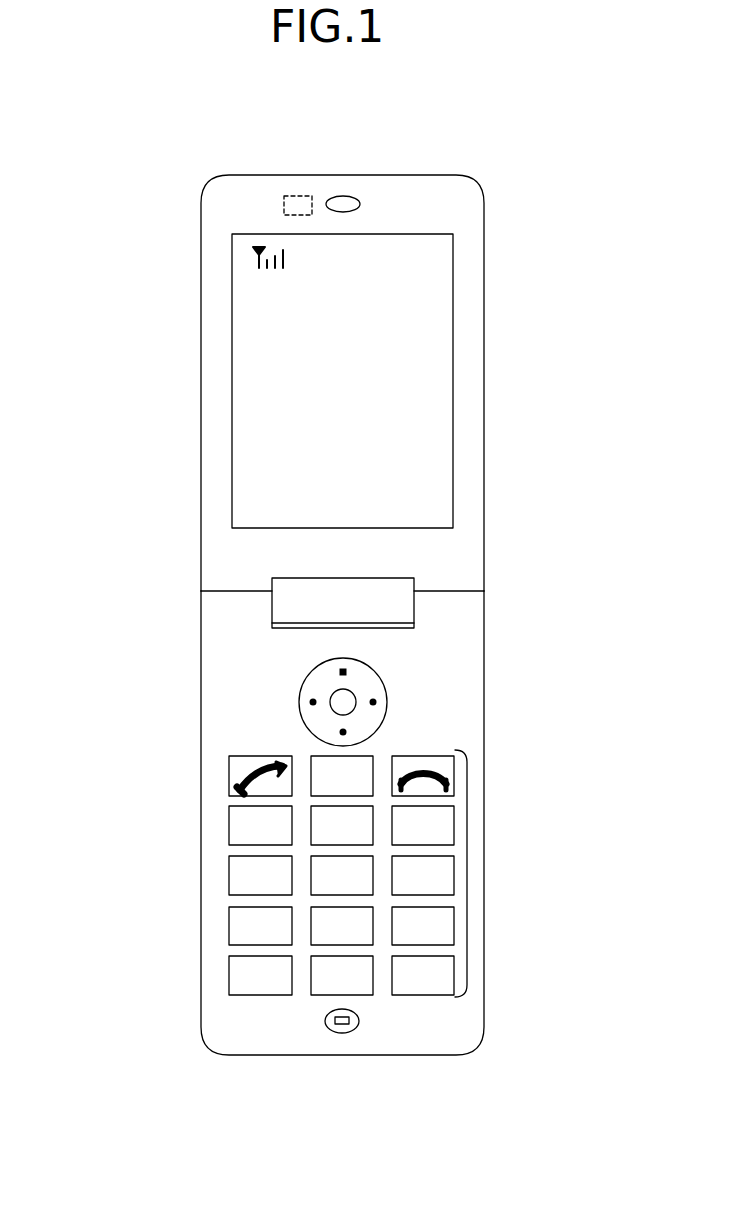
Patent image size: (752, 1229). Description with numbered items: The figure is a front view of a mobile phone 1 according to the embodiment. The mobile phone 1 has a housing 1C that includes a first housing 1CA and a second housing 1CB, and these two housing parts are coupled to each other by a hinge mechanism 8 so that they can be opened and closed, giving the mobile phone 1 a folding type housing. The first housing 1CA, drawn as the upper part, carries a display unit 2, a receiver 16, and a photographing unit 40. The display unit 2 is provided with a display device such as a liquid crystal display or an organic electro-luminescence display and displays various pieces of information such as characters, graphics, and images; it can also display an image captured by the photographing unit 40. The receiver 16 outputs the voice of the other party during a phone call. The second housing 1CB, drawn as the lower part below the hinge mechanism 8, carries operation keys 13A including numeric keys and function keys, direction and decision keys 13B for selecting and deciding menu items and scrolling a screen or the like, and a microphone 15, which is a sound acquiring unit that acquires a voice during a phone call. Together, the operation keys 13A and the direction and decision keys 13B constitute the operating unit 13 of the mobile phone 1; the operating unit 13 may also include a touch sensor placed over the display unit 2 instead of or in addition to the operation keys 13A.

The mobile phone 1 is at (505, 152).
The housing 1C is at (107, 542).
The first housing 1CA is at (250, 554).
The second housing 1CB is at (250, 668).
The display unit 2 is at (250, 290).
The hinge mechanism 8 is at (508, 589).
The operating unit 13 is at (577, 678).
The operation keys 13A is at (468, 873).
The direction and decision keys 13B is at (375, 702).
The microphone 15 is at (342, 1033).
The receiver 16 is at (343, 196).
The photographing unit 40 is at (296, 196).